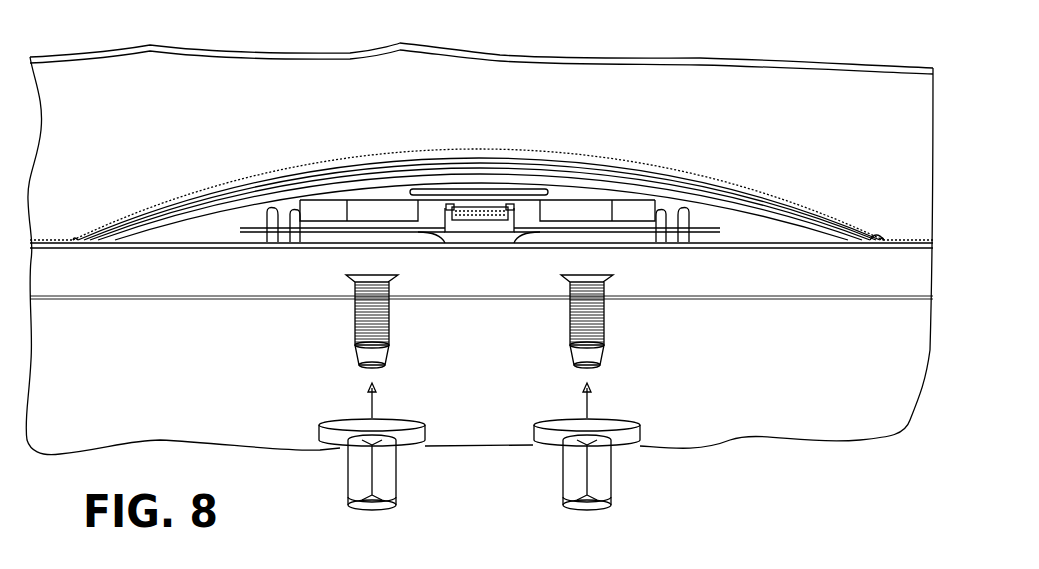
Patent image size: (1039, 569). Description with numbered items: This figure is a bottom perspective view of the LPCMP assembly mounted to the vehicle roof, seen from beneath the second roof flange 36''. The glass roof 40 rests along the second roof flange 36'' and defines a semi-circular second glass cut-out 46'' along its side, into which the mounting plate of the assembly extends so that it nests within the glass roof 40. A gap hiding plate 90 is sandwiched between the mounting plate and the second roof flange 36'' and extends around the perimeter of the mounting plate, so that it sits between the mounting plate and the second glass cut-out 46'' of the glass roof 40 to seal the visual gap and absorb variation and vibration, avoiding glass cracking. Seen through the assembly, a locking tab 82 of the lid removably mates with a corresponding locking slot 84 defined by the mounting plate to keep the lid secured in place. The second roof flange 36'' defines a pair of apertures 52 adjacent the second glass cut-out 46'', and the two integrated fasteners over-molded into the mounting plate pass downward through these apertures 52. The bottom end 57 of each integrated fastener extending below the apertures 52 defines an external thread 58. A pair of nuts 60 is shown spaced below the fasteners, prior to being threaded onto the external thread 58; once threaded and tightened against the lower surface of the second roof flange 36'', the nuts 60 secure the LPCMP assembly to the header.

The glass roof 40 is at (842, 113).
The second roof flange 36'' is at (481, 330).
The second glass cut-out 46'' is at (874, 292).
The gap hiding plate 90 is at (718, 222).
The locking tab 82 is at (492, 210).
The locking slot 84 is at (463, 208).
The aperture 52 is at (346, 283).
The external thread 58 is at (388, 305).
The bottom end 57 is at (370, 368).
The nut 60 is at (565, 470).